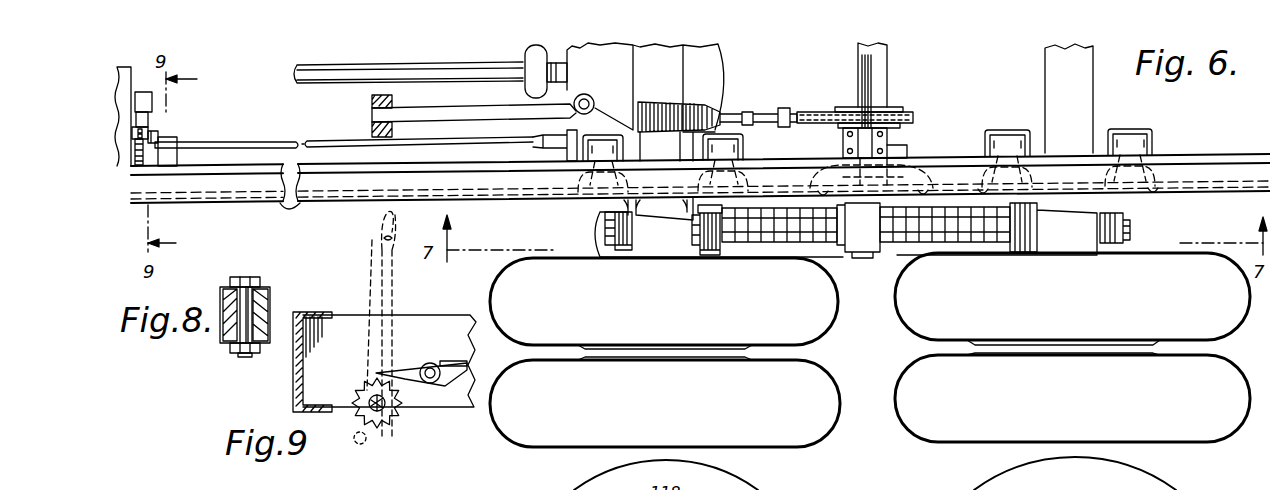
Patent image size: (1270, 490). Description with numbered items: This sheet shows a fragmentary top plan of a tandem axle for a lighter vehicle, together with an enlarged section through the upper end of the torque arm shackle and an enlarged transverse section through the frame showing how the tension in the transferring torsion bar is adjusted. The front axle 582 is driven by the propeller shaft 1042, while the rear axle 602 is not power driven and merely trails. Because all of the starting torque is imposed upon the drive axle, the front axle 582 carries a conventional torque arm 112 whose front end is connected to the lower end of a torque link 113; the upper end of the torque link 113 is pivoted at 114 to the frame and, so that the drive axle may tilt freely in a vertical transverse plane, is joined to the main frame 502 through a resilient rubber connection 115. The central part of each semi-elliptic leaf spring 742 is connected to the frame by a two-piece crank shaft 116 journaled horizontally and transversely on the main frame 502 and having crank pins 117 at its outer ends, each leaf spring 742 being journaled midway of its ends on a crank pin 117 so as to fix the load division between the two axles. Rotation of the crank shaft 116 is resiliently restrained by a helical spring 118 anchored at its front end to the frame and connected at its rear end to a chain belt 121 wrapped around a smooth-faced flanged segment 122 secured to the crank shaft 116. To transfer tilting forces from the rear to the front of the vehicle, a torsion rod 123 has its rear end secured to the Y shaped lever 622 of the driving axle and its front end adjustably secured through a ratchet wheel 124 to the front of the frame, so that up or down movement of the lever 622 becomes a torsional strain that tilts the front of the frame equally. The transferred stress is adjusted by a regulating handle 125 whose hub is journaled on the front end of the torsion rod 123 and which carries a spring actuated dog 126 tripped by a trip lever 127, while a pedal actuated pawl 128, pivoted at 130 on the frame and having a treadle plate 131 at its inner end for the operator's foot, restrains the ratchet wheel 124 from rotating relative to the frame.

In FIG. 6, the main frame 502 is at (140, 58).
In FIG. 9, the main frame 502 is at (384, 401).
In FIG. 6, the propeller shaft 1042 is at (437, 58).
In FIG. 6, the torque arm 112 is at (477, 100).
In FIG. 8, the torque arm 112 is at (270, 302).
In FIG. 6, the torque link 113 is at (372, 100).
In FIG. 8, the torque link 113 is at (232, 282).
In FIG. 8, the pivot 114 is at (247, 277).
In FIG. 8, the resilient rubber connection 115 is at (270, 296).
In FIG. 6, the two-piece crank shaft 116 is at (857, 48).
In FIG. 6, the crank pin 117 is at (863, 258).
In FIG. 6, the helical spring 118 is at (718, 106).
In FIG. 6, the chain belt 121 is at (830, 98).
In FIG. 6, the smooth-faced flanged segment 122 is at (897, 106).
In FIG. 6, the torsion rod 123 is at (305, 140).
In FIG. 9, the torsion rod 123 is at (353, 397).
In FIG. 6, the ratchet wheel 124 is at (142, 165).
In FIG. 9, the ratchet wheel 124 is at (392, 422).
In FIG. 6, the regulating handle 125 is at (178, 156).
In FIG. 9, the regulating handle 125 is at (378, 226).
In FIG. 9, the spring actuated dog 126 is at (366, 442).
In FIG. 6, the trip lever 127 is at (198, 141).
In FIG. 9, the trip lever 127 is at (396, 222).
In FIG. 6, the pedal actuated pawl 128 is at (150, 131).
In FIG. 9, the pedal actuated pawl 128 is at (390, 375).
In FIG. 6, the pivot 130 is at (150, 113).
In FIG. 9, the pivot 130 is at (440, 387).
In FIG. 6, the treadle plate 131 is at (150, 93).
In FIG. 9, the treadle plate 131 is at (457, 360).
In FIG. 6, the front axle 582 is at (673, 57).
In FIG. 6, the rear axle 602 is at (1093, 92).
In FIG. 6, the Y shaped lever 622 is at (602, 134).
In FIG. 6, the semi-elliptic leaf spring 742 is at (905, 239).